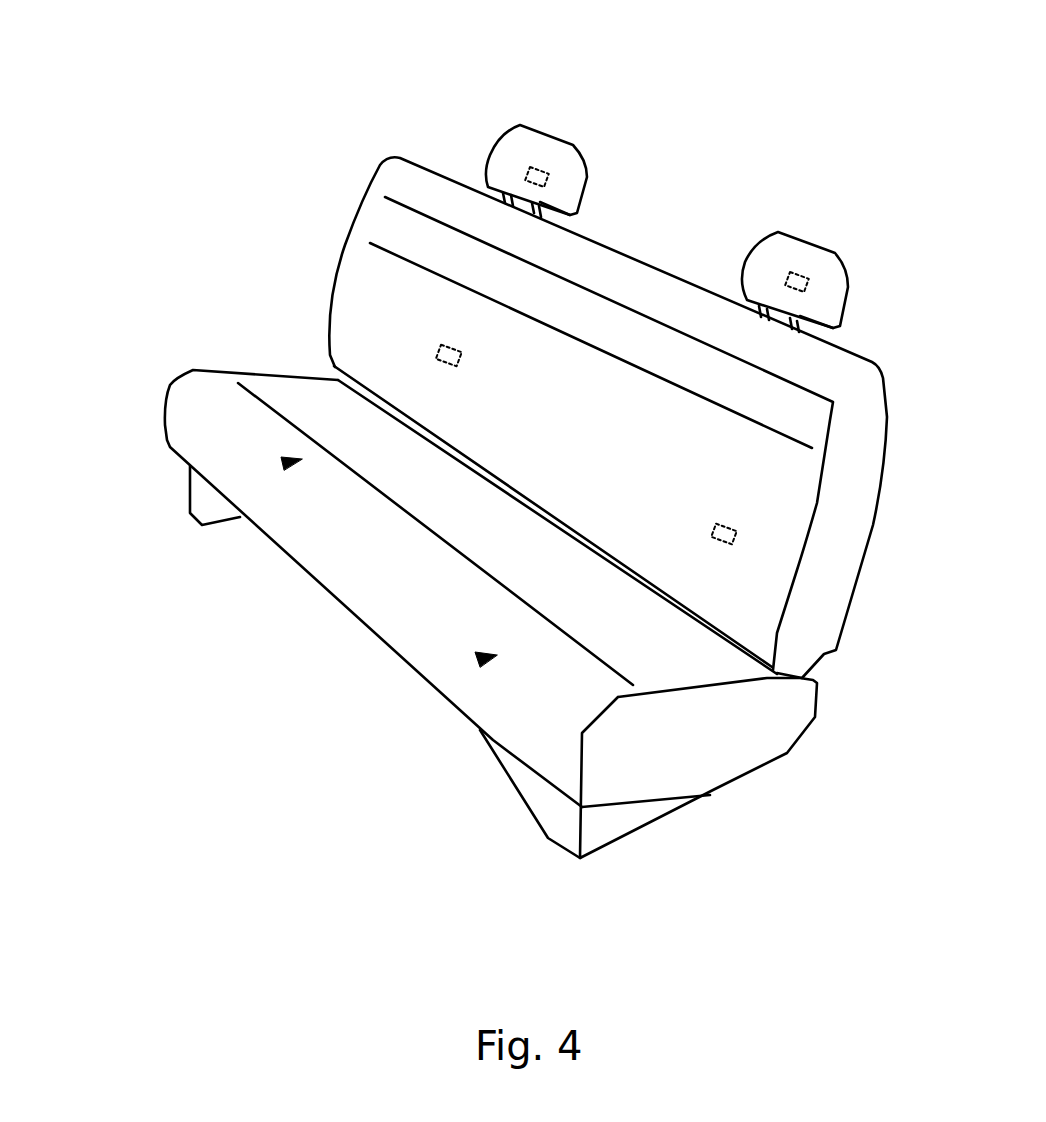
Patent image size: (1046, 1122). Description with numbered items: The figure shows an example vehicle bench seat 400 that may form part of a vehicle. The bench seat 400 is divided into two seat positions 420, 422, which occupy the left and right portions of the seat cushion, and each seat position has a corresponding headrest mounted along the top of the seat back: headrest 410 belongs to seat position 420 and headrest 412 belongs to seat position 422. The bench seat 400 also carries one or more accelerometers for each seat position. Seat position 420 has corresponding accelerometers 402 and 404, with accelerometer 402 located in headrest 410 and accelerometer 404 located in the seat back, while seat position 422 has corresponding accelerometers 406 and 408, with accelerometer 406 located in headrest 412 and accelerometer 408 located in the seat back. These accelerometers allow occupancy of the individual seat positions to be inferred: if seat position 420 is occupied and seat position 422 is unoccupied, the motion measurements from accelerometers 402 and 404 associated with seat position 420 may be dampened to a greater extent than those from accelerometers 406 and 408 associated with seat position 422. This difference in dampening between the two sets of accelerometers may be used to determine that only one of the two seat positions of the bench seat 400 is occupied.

The bench seat 400 is at (210, 382).
The accelerometer 402 is at (547, 182).
The accelerometer 404 is at (438, 356).
The accelerometer 406 is at (807, 284).
The accelerometer 408 is at (735, 538).
The headrest 410 is at (545, 135).
The headrest 412 is at (818, 243).
The seat position 420 is at (285, 464).
The seat position 422 is at (480, 659).